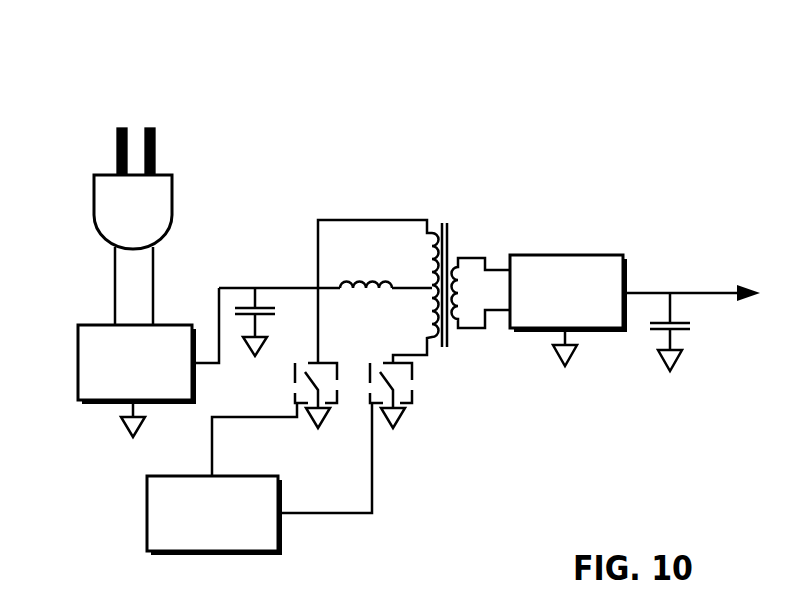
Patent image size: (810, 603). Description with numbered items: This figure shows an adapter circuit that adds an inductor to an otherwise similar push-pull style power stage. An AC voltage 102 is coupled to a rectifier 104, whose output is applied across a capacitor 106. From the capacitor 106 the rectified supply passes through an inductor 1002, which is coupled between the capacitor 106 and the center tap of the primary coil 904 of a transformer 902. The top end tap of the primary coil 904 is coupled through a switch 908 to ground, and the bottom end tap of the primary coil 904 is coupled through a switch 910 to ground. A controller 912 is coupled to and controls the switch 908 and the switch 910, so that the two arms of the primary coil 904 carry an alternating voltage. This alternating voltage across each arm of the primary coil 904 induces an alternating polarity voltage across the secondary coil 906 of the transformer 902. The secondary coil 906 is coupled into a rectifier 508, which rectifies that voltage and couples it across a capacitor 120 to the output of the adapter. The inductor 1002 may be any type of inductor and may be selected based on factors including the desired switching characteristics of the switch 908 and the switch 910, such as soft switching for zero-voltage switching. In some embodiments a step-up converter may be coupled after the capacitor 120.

The AC voltage 102 is at (170, 157).
The rectifier 104 is at (148, 362).
The capacitor 106 is at (245, 293).
The inductor 1002 is at (380, 265).
The primary coil 904 is at (412, 200).
The transformer 902 is at (420, 209).
The secondary coil 906 is at (520, 236).
The rectifier 508 is at (568, 310).
The capacitor 120 is at (613, 368).
The switch 908 is at (345, 418).
The switch 910 is at (425, 400).
The controller 912 is at (259, 479).